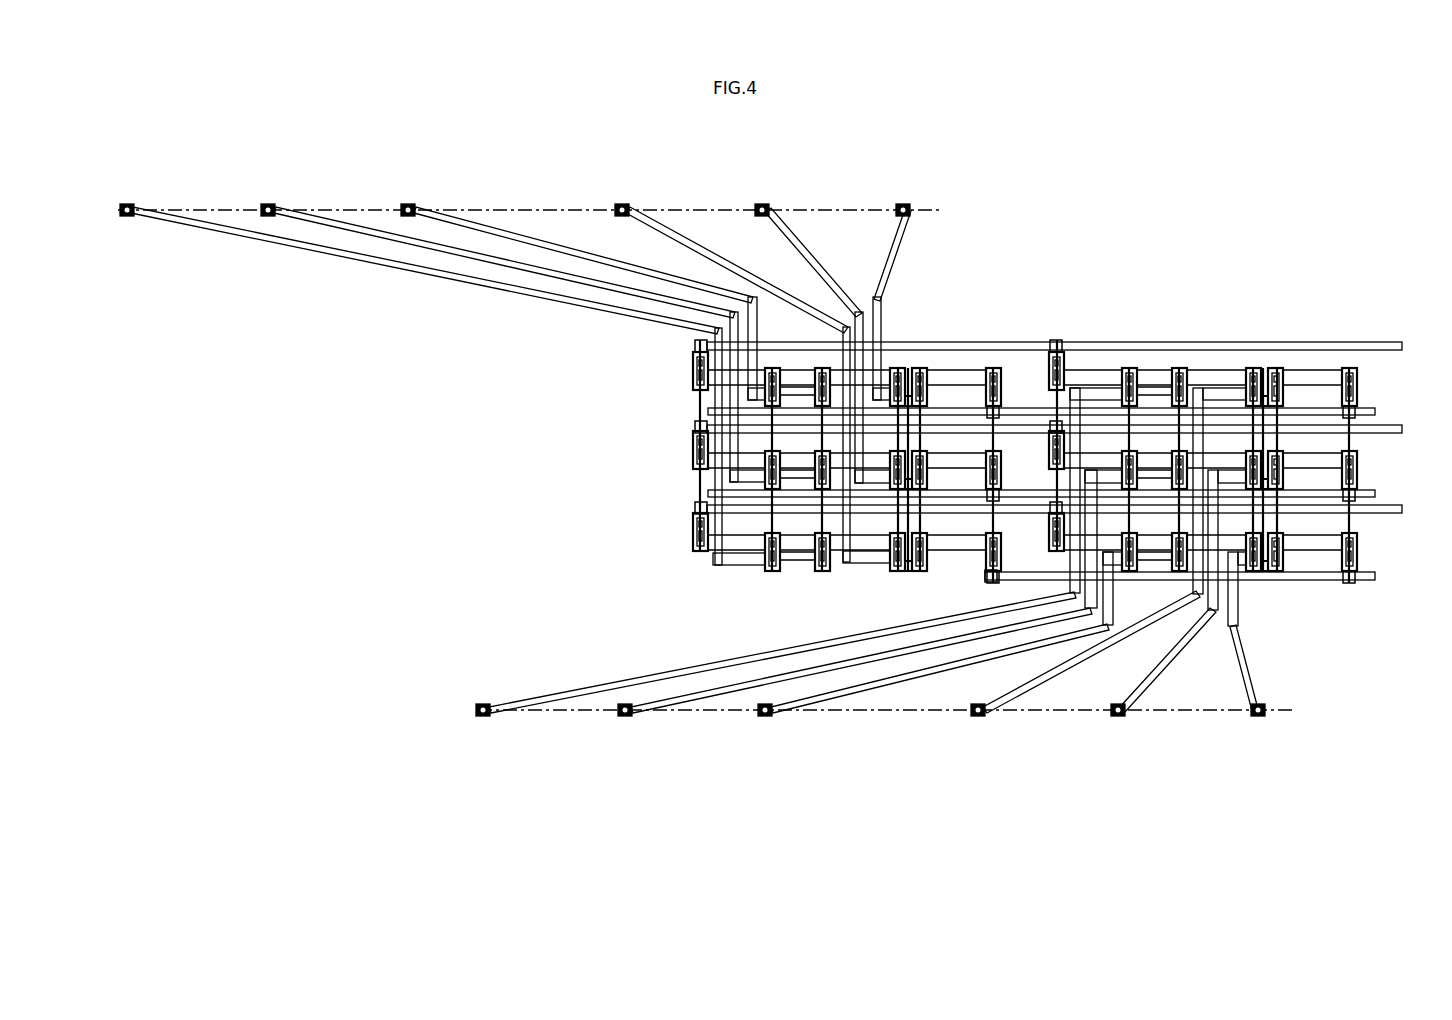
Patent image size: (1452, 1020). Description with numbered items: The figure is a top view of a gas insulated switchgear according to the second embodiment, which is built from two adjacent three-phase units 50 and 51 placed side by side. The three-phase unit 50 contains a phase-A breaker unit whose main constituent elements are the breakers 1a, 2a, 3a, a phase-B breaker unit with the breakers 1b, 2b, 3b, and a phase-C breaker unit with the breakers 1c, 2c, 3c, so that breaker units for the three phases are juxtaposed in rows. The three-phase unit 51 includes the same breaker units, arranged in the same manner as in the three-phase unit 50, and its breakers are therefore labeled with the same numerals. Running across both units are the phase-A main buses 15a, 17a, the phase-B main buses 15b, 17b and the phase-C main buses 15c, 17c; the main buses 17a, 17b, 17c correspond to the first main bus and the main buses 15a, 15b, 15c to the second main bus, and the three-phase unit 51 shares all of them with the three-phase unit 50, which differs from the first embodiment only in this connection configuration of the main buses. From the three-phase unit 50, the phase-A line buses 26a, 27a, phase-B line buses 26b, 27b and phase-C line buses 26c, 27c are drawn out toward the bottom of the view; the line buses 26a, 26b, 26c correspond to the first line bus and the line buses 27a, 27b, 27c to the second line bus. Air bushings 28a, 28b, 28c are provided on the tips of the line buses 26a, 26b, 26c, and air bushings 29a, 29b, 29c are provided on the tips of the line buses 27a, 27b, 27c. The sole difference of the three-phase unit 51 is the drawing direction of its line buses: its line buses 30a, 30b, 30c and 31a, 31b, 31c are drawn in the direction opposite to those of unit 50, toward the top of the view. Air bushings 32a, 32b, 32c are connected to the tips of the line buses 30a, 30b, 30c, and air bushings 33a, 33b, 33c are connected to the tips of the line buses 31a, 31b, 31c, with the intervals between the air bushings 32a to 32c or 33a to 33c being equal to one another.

The three-phase unit 50 is at (1180, 283).
The three-phase unit 51 is at (750, 576).
The breaker 1a is at (747, 541).
The breaker 1b is at (757, 459).
The breaker 1c is at (752, 390).
The breaker 2a is at (868, 541).
The breaker 2b is at (880, 459).
The breaker 2c is at (885, 368).
The breaker 3a is at (952, 541).
The breaker 3b is at (955, 459).
The breaker 3c is at (955, 376).
The phase-A main bus 15a is at (1376, 581).
The phase-B main bus 15b is at (1376, 494).
The phase-C main bus 15c is at (1376, 412).
The phase-A main bus 17a is at (956, 505).
The phase-B main bus 17b is at (956, 422).
The phase-C main bus 17c is at (959, 340).
The phase-A line bus 26a is at (908, 678).
The phase-B line bus 26b is at (737, 700).
The phase-C line bus 26c is at (794, 636).
The phase-A line bus 27a is at (1258, 648).
The phase-B line bus 27b is at (1156, 674).
The phase-C line bus 27c is at (1058, 670).
The air bushing 28a is at (768, 718).
The air bushing 28b is at (625, 718).
The air bushing 28c is at (483, 718).
The air bushing 29a is at (1260, 718).
The air bushing 29b is at (1115, 718).
The air bushing 29c is at (975, 718).
The line bus 30a is at (263, 242).
The line bus 30b is at (364, 226).
The line bus 30c is at (644, 270).
The line bus 31a is at (834, 322).
The line bus 31b is at (860, 314).
The line bus 31c is at (882, 306).
The air bushing 32a is at (126, 204).
The air bushing 32b is at (264, 204).
The air bushing 32c is at (406, 204).
The air bushing 33a is at (620, 204).
The air bushing 33b is at (761, 204).
The air bushing 33c is at (902, 204).